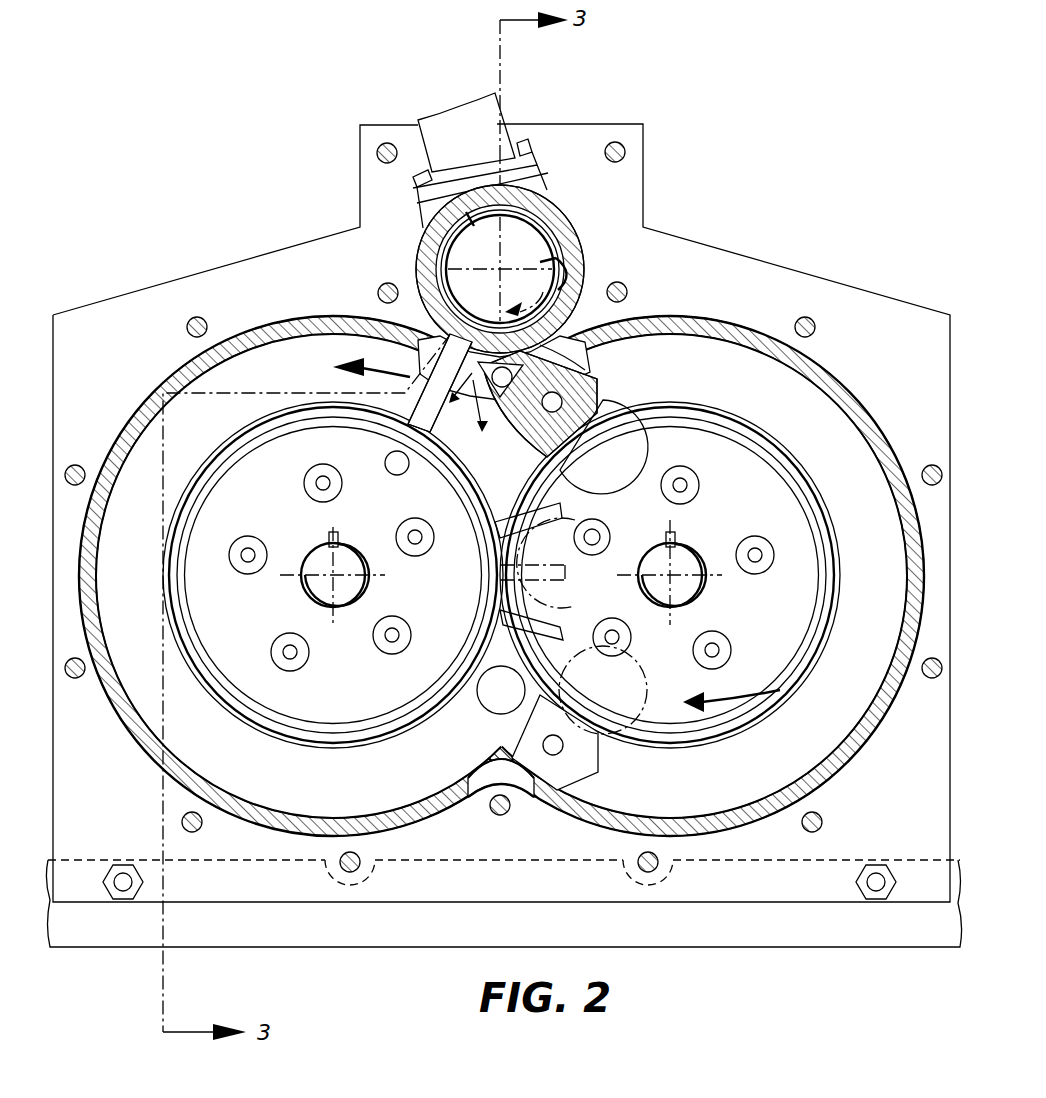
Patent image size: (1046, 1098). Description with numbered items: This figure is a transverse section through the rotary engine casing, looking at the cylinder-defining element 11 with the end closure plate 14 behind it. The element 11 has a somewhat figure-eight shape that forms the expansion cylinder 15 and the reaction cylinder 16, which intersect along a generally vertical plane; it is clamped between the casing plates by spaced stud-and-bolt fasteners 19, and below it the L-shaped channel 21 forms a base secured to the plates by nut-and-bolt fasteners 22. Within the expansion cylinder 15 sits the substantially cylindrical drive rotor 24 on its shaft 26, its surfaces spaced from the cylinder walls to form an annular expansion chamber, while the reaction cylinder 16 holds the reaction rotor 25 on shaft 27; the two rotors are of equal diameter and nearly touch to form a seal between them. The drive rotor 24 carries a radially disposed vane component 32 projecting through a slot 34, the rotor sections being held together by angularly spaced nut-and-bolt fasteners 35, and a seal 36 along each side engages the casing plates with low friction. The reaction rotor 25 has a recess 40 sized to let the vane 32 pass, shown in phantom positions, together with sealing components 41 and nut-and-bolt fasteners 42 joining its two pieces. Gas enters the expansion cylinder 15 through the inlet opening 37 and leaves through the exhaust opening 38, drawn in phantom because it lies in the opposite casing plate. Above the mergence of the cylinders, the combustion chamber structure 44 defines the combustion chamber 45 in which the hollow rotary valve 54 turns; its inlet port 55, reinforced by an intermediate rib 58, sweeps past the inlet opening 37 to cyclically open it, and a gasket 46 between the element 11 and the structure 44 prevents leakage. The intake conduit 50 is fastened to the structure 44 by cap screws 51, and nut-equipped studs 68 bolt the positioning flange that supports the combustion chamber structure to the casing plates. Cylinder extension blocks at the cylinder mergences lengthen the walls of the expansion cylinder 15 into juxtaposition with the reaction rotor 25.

The cylinder-defining element 11 is at (255, 283).
The end closure plate 14 is at (156, 298).
The expansion cylinder 15 is at (300, 346).
The reaction cylinder 16 is at (818, 414).
The stud-and-bolt fasteners 19 is at (78, 466).
The L-shaped channel 21 is at (226, 928).
The nut-and-bolt fasteners 22 is at (123, 895).
The drive rotor 24 is at (333, 589).
The reaction rotor 25 is at (670, 575).
The shaft 26 is at (322, 578).
The shaft 27 is at (700, 598).
The vane component 32 is at (425, 460).
The slot 34 is at (402, 430).
The nut-and-bolt fasteners 35 is at (415, 556).
The seal 36 is at (287, 724).
The inlet opening 37 is at (410, 399).
The exhaust opening 38 is at (480, 682).
The recess 40 is at (603, 463).
The sealing components 41 is at (818, 534).
The nut-and-bolt fasteners 42 is at (753, 574).
The combustion chamber structure 44 is at (585, 238).
The combustion chamber 45 is at (570, 262).
The gasket 46 is at (578, 362).
The intake conduit 50 is at (437, 114).
The cap screws 51 is at (534, 148).
The rotary valve 54 is at (505, 487).
The inlet port 55 is at (560, 229).
The rib 58 is at (565, 285).
The nut-equipped studs 68 is at (389, 143).